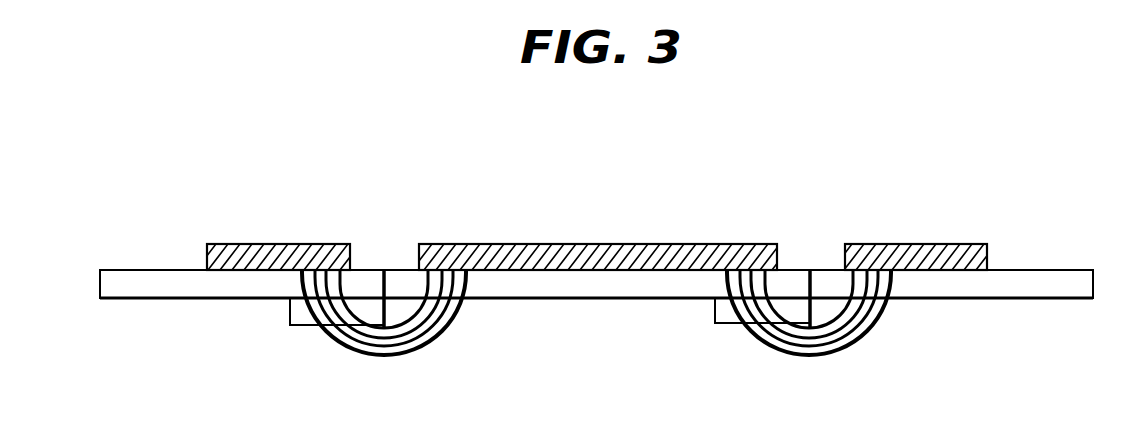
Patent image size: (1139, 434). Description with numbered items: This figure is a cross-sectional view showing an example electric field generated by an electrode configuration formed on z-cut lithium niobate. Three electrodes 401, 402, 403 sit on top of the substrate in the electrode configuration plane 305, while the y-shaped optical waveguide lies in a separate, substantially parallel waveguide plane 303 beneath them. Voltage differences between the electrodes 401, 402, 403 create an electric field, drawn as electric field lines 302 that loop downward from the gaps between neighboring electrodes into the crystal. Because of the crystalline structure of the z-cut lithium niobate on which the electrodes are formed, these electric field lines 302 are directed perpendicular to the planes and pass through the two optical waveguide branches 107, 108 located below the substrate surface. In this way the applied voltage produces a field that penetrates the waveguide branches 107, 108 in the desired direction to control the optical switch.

The waveguide plane 303 is at (1078, 270).
The electrode configuration plane 305 is at (1078, 298).
The electrode 403 is at (238, 244).
The electrode 402 is at (452, 244).
The electrode 401 is at (953, 244).
The electric field lines 302 is at (372, 353).
The optical waveguide branch 108 is at (290, 315).
The optical waveguide branch 107 is at (715, 313).